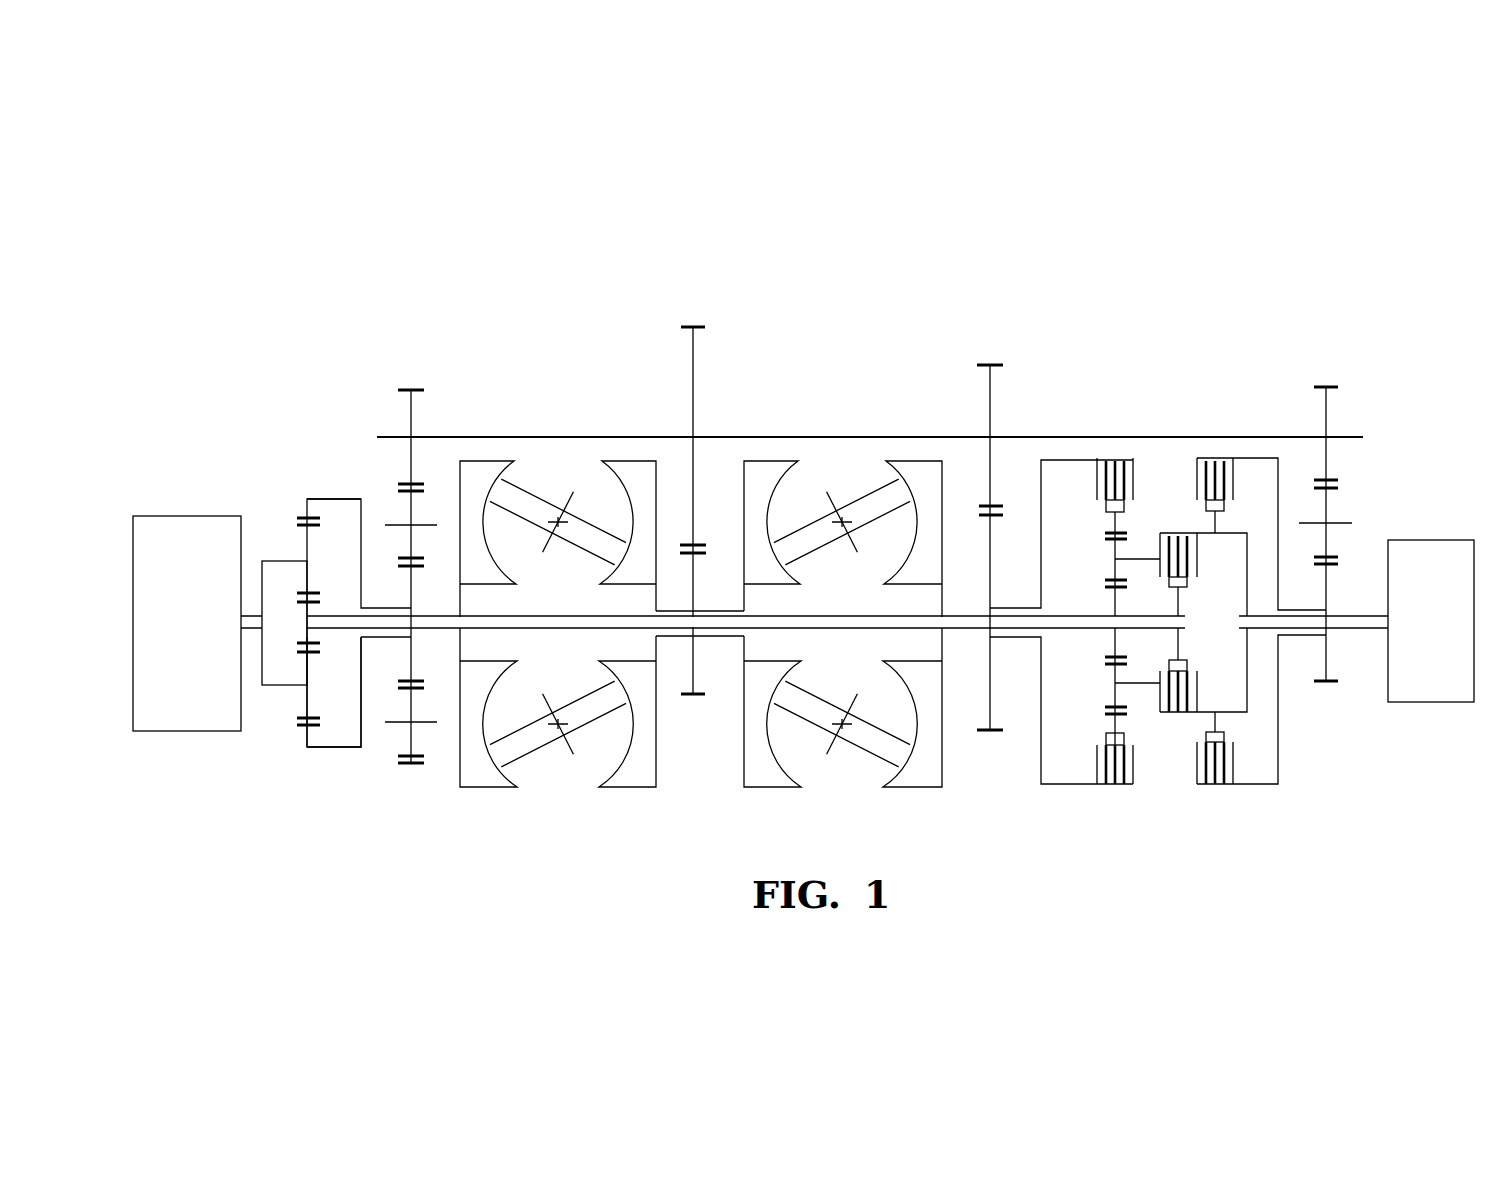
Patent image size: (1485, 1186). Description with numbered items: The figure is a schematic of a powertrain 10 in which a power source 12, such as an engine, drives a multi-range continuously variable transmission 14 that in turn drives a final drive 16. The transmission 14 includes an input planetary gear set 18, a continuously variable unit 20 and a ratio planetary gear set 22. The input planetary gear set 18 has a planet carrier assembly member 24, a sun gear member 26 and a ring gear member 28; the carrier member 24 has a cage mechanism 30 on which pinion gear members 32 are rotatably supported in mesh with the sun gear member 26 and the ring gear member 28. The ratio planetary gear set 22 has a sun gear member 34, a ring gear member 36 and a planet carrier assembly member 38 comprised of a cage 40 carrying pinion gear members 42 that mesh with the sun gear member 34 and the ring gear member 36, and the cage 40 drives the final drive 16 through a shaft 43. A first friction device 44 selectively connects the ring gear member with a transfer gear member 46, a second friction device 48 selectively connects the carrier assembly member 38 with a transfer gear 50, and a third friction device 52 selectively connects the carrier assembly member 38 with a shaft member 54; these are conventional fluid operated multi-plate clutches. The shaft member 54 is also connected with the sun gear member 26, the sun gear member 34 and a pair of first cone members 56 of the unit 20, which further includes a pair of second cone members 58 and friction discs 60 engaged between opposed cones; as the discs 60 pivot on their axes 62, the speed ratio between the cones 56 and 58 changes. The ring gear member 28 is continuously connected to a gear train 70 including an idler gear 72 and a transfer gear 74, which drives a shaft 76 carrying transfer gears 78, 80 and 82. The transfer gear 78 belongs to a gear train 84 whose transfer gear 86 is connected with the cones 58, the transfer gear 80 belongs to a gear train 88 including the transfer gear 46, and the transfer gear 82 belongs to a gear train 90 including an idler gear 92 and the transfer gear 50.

The powertrain 10 is at (449, 361).
The power source 12 is at (173, 512).
The multi-range continuously variable transmission 14 is at (589, 413).
The final drive 16 is at (1432, 537).
The input planetary gear set 18 is at (330, 490).
The continuously variable unit 20 is at (707, 475).
The ratio planetary gear set 22 is at (1136, 727).
The planet carrier assembly member 24 is at (274, 689).
The sun gear member 26 is at (310, 640).
The ring gear member 28 is at (304, 515).
The cage mechanism 30 is at (279, 560).
The pinion gear members 32 is at (309, 576).
The sun gear member 34 is at (1103, 641).
The ring gear member 36 is at (1104, 521).
The planet carrier assembly member 38 is at (1139, 541).
The cage 40 is at (1130, 560).
The pinion gear members 42 is at (1104, 571).
The shaft 43 is at (1355, 632).
The first selectively engageable friction device 44 is at (1128, 451).
The transfer gear member 46 is at (992, 589).
The second selectively engageable friction device 48 is at (1224, 453).
The transfer gear 50 is at (1327, 590).
The third selectively engageable friction device 52 is at (1204, 556).
The shaft member 54 is at (959, 630).
The first cone members 56 is at (484, 589).
The second cone members 58 is at (630, 660).
The friction discs 60 is at (412, 597).
The axes 62 is at (564, 531).
The gear train 70 is at (389, 508).
The idler gear 72 is at (413, 506).
The transfer gear 74 is at (412, 414).
The shaft 76 is at (540, 437).
The transfer gear 78 is at (694, 388).
The transfer gear 80 is at (991, 408).
The transfer gear 82 is at (1327, 416).
The gear train 84 is at (684, 531).
The transfer gear 86 is at (696, 666).
The gear train 88 is at (998, 498).
The gear train 90 is at (1346, 484).
The idler gear 92 is at (1327, 510).